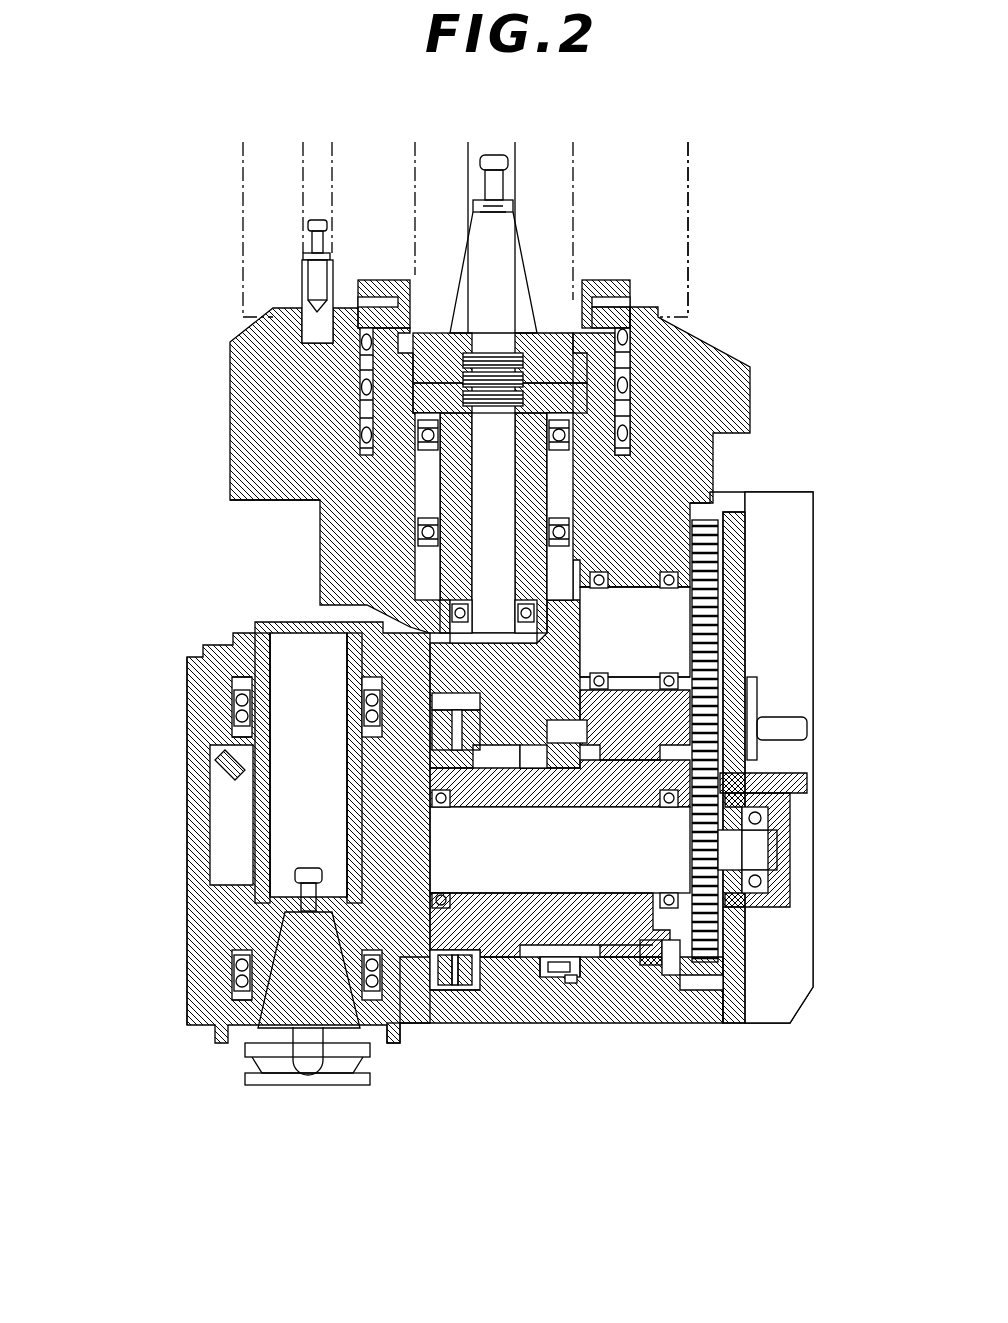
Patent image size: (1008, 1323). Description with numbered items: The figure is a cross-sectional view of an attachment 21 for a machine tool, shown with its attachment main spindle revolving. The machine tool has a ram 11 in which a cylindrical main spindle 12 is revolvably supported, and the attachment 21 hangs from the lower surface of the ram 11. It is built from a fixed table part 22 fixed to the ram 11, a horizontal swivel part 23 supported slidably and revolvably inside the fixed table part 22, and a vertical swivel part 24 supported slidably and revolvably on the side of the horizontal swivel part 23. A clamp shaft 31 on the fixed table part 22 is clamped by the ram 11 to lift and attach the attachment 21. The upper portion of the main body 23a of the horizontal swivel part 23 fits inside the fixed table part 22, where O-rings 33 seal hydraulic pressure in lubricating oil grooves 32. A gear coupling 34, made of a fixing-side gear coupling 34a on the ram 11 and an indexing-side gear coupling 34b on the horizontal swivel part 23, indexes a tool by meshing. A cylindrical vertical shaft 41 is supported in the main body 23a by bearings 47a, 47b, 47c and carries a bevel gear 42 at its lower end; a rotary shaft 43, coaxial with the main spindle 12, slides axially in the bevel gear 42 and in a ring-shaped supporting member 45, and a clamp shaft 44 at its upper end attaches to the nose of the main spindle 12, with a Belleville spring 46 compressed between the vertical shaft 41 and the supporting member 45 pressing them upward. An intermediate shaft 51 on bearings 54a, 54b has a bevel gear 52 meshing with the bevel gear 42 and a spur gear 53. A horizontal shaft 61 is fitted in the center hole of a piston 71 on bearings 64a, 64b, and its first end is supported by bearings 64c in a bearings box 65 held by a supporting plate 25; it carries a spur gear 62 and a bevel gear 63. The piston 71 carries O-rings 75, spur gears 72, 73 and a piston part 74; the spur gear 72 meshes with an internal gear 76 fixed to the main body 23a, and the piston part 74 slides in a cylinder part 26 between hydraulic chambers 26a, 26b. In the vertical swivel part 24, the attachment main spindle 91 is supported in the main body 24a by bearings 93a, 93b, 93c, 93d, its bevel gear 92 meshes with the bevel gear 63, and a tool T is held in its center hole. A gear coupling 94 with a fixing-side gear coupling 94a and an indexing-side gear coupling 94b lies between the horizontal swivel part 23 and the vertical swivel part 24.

The ram 11 is at (692, 158).
The main spindle 12 is at (576, 175).
The attachment 21 is at (140, 560).
The fixed table part 22 is at (230, 352).
The horizontal swivel part 23 is at (655, 1035).
The main body 23a is at (633, 1027).
The vertical swivel part 24 is at (185, 655).
The main body 24a is at (187, 672).
The supporting plate 25 is at (747, 958).
The cylinder part 26 is at (558, 990).
The hydraulic chamber 26a is at (560, 1000).
The hydraulic chamber 26b is at (600, 1000).
The clamp shaft 31 is at (308, 278).
The lubricating oil grooves 32 is at (360, 412).
The O-ring 33 is at (360, 438).
The gear coupling 34 is at (608, 272).
The fixing-side gear coupling 34a is at (628, 289).
The indexing-side gear coupling 34b is at (628, 320).
The vertical shaft 41 is at (447, 490).
The bevel gear 42 is at (543, 560).
The rotary shaft 43 is at (493, 590).
The clamp shaft 44 is at (473, 230).
The supporting member 45 is at (620, 390).
The Belleville spring 46 is at (640, 420).
The bearing 47a is at (420, 447).
The bearing 47b is at (418, 532).
The bearing 47c is at (445, 612).
The intermediate shaft 51 is at (673, 603).
The bevel gear 52 is at (692, 527).
The spur gear 53 is at (722, 553).
The bearing 54a is at (655, 660).
The bearing 54b is at (668, 682).
The horizontal shaft 61 is at (777, 848).
The spur gear 62 is at (757, 752).
The bevel gear 63 is at (400, 917).
The bearing 64a is at (443, 887).
The bearing 64b is at (660, 887).
The bearing 64c is at (768, 817).
The bearings box 65 is at (790, 880).
The piston 71 is at (747, 780).
The spur gear 72 is at (677, 1000).
The spur gear 73 is at (667, 1023).
The piston part 74 is at (577, 1027).
The O-rings 75 is at (578, 728).
The internal gear 76 is at (680, 978).
The attachment main spindle 91 is at (255, 855).
The bevel gear 92 is at (237, 770).
The bearing 93a is at (236, 702).
The bearing 93b is at (236, 722).
The bearing 93c is at (236, 965).
The bearing 93d is at (236, 990).
The gear coupling 94 is at (447, 1005).
The fixing-side gear coupling 94a is at (468, 988).
The indexing-side gear coupling 94b is at (437, 1010).
The tool T is at (274, 1090).